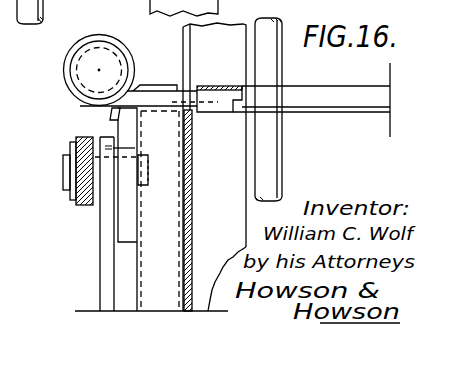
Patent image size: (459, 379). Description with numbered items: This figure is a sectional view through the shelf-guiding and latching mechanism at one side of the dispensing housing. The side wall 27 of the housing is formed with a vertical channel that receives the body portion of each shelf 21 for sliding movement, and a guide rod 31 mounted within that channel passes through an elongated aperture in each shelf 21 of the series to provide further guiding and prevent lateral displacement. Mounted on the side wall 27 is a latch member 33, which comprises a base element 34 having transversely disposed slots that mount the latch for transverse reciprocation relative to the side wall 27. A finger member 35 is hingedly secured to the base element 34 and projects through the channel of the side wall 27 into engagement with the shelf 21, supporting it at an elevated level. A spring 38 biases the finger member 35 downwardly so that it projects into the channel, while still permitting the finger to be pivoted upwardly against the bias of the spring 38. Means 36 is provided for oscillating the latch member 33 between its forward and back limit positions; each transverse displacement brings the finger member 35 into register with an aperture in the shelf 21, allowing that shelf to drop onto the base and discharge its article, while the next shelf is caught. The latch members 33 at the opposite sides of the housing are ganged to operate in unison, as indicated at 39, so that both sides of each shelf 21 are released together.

The shelf 21 is at (363, 98).
The side wall 27 is at (183, 36).
The guide rod 31 is at (280, 160).
The latch member 33 is at (87, 62).
The base element 34 is at (123, 131).
The finger member 35 is at (219, 102).
The means for oscillating the latch 36 is at (102, 262).
The spring 38 is at (150, 85).
The ganging means 39 is at (77, 208).